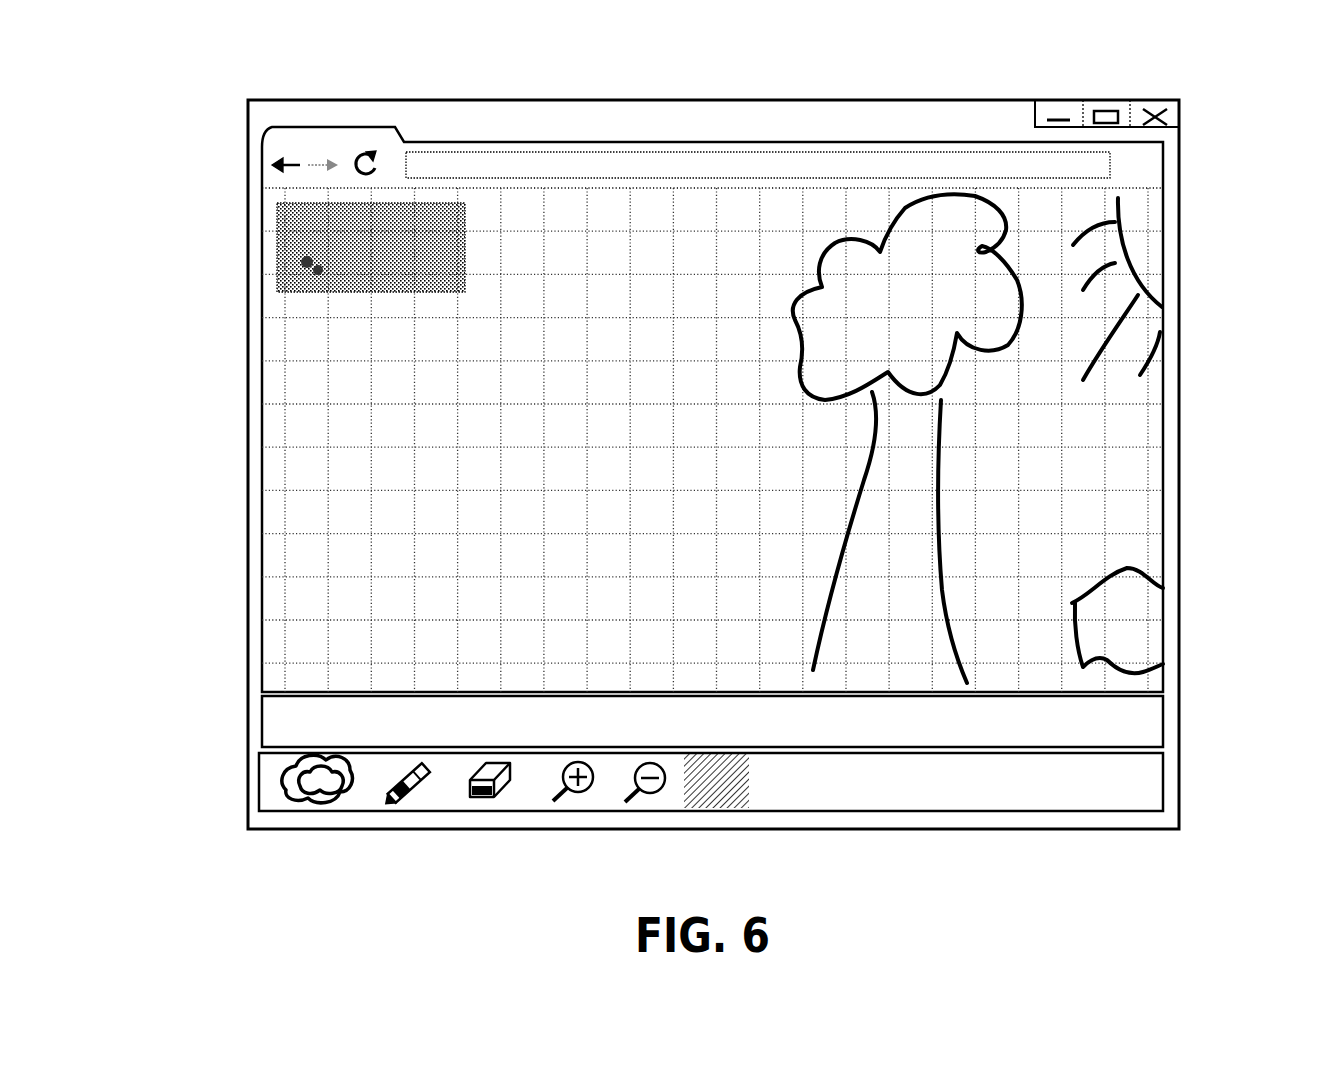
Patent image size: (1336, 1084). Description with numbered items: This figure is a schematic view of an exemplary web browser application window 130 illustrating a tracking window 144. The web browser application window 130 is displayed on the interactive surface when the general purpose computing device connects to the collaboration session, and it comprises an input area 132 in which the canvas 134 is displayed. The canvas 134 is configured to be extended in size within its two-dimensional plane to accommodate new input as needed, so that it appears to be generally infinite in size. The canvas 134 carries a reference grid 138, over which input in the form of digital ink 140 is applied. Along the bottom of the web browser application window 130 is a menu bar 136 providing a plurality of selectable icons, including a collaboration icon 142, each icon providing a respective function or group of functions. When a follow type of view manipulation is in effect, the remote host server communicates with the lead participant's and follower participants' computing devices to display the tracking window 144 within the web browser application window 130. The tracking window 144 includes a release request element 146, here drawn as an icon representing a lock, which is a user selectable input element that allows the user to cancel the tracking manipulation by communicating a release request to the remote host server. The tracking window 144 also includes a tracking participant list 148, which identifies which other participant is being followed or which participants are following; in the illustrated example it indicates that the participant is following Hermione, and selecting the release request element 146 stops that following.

The web browser application window 130 is at (226, 114).
The input area 132 is at (1168, 540).
The canvas 134 is at (1072, 443).
The menu bar 136 is at (711, 819).
The reference grid 138 is at (327, 420).
The digital ink 140 is at (1122, 245).
The collaboration icon 142 is at (709, 808).
The tracking window 144 is at (312, 276).
The release request element 146 is at (313, 293).
The tracking participant list 148 is at (438, 217).